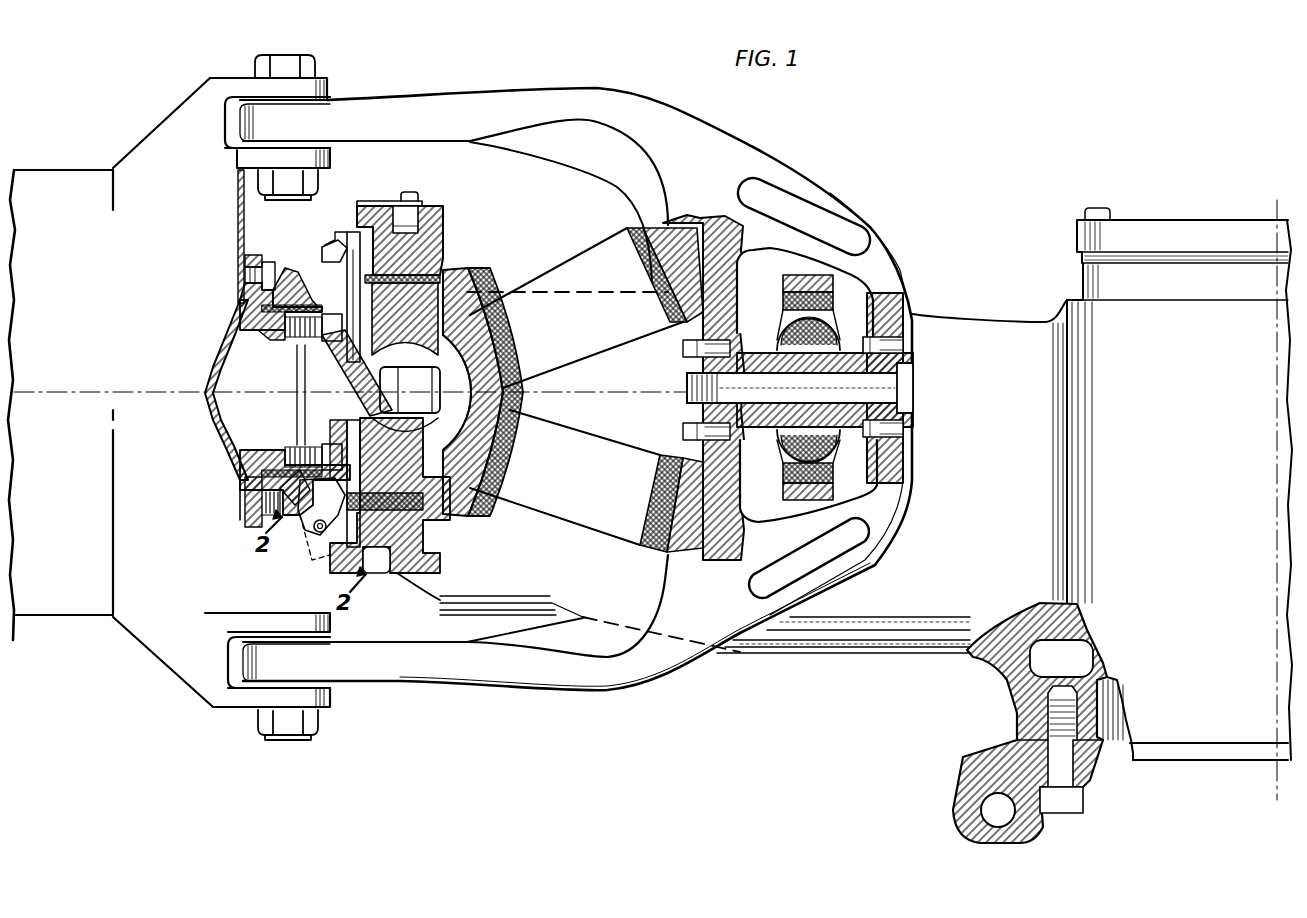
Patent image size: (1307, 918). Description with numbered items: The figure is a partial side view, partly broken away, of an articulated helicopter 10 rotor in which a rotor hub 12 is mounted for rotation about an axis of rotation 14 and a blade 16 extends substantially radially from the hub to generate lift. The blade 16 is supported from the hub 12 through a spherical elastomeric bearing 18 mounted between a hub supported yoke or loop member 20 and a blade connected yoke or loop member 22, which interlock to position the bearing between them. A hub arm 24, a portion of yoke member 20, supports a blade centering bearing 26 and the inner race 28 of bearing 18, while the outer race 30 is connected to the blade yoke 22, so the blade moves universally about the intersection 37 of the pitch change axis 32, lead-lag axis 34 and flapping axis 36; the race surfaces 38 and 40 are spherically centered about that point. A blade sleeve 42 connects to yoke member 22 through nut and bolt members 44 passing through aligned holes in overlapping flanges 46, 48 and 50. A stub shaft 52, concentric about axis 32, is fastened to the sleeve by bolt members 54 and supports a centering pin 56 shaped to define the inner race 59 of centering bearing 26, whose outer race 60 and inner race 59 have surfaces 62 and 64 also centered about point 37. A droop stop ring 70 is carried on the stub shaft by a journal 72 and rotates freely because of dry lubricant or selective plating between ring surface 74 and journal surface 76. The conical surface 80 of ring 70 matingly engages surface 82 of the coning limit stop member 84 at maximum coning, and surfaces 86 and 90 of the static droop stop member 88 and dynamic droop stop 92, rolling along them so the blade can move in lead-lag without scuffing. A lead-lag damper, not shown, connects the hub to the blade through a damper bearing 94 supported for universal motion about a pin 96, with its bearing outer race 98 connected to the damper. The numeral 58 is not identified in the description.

The articulated helicopter 10 is at (1058, 147).
The rotor hub 12 is at (982, 321).
The axis of rotation 14 is at (1277, 438).
The blade 16 is at (92, 620).
The spherical elastomeric bearing 18 is at (588, 262).
The hub supported yoke or loop member 20 is at (435, 600).
The blade connected yoke or loop member 22 is at (516, 97).
The hub arm 24 is at (440, 216).
The blade centering bearing 26 is at (372, 290).
The inner race 28 is at (466, 290).
The outer race 30 is at (697, 218).
The pitch change axis 32 is at (87, 391).
The lead-lag axis 34 is at (455, 392).
The flapping axis 36 is at (410, 390).
The intersection 37 is at (392, 390).
The surface 38 is at (499, 315).
The surface 40 is at (628, 246).
The blade sleeve 42 is at (207, 693).
The nut and bolt members 44 is at (285, 63).
The flange 46 is at (330, 627).
The flange 48 is at (290, 670).
The flange 50 is at (330, 698).
The stub shaft 52 is at (232, 333).
The bolt members 54 is at (272, 260).
The centering pin 56 is at (447, 423).
The drive flange 58 is at (334, 350).
The inner race 59 is at (398, 390).
The outer race 60 is at (372, 245).
The surface 62 is at (365, 284).
The surface 64 is at (455, 490).
The droop stop ring 70 is at (245, 292).
The journal 72 is at (245, 310).
The ring surface 74 is at (278, 334).
The journal surface 76 is at (300, 348).
The surface 80 is at (300, 278).
The surface 82 is at (322, 252).
The coning limit stop member 84 is at (387, 200).
The surface 86 is at (240, 487).
The static droop stop member 88 is at (275, 452).
The surface 90 is at (304, 545).
The dynamic droop stop 92 is at (365, 568).
The damper bearing 94 is at (830, 331).
The pin 96 is at (858, 392).
The bearing outer race 98 is at (795, 276).